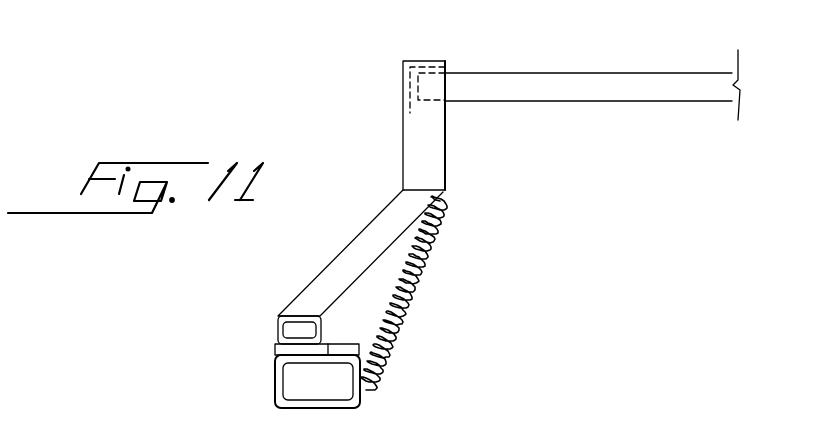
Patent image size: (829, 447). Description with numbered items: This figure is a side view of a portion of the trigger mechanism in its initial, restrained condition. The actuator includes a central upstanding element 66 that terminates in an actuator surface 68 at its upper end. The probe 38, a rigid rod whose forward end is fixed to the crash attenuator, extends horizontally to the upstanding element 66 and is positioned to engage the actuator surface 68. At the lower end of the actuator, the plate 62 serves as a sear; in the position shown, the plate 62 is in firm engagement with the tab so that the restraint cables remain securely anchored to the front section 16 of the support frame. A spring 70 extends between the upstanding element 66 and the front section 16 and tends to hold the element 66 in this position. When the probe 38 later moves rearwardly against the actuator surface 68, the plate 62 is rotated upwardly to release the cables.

The front section 16 is at (330, 408).
The probe 38 is at (620, 97).
The plate 62 is at (343, 348).
The central upstanding element 66 is at (428, 153).
The actuator surface 68 is at (433, 60).
The spring 70 is at (417, 283).